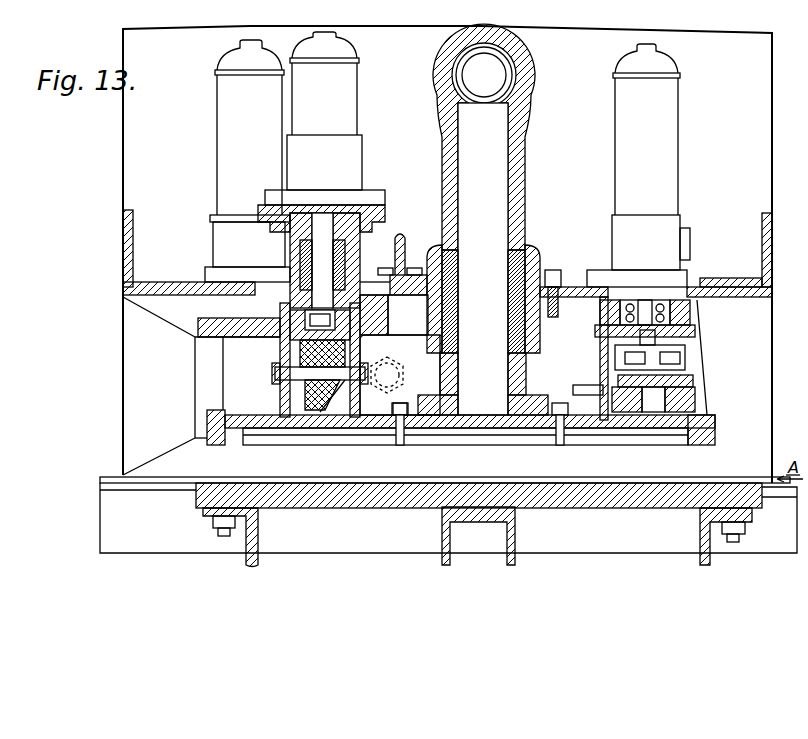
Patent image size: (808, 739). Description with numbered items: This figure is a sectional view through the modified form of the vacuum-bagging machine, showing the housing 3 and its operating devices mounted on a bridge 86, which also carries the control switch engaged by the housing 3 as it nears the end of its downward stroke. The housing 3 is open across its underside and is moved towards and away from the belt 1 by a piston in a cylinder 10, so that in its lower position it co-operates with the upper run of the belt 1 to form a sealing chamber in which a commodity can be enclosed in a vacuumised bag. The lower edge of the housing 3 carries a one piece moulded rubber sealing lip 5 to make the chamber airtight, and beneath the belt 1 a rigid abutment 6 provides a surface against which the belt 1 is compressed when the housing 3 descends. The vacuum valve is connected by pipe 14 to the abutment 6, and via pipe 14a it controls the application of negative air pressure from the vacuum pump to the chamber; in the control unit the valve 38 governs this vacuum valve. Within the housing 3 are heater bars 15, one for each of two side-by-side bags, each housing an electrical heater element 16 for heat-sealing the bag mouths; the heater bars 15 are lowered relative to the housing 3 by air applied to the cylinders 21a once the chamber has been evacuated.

The cylinder 10 is at (225, 115).
The cylinders 21a is at (343, 100).
The pipe 14 is at (318, 260).
The pipe 14a is at (497, 208).
The bridge 86 is at (570, 287).
The valve 38 is at (756, 297).
The housing 3 is at (703, 373).
The rubber sealing lip 5 is at (717, 439).
The belt 1 is at (760, 483).
The rigid abutment 6 is at (622, 505).
The electrical heater element 16 is at (317, 400).
The heater bars 15 is at (328, 395).